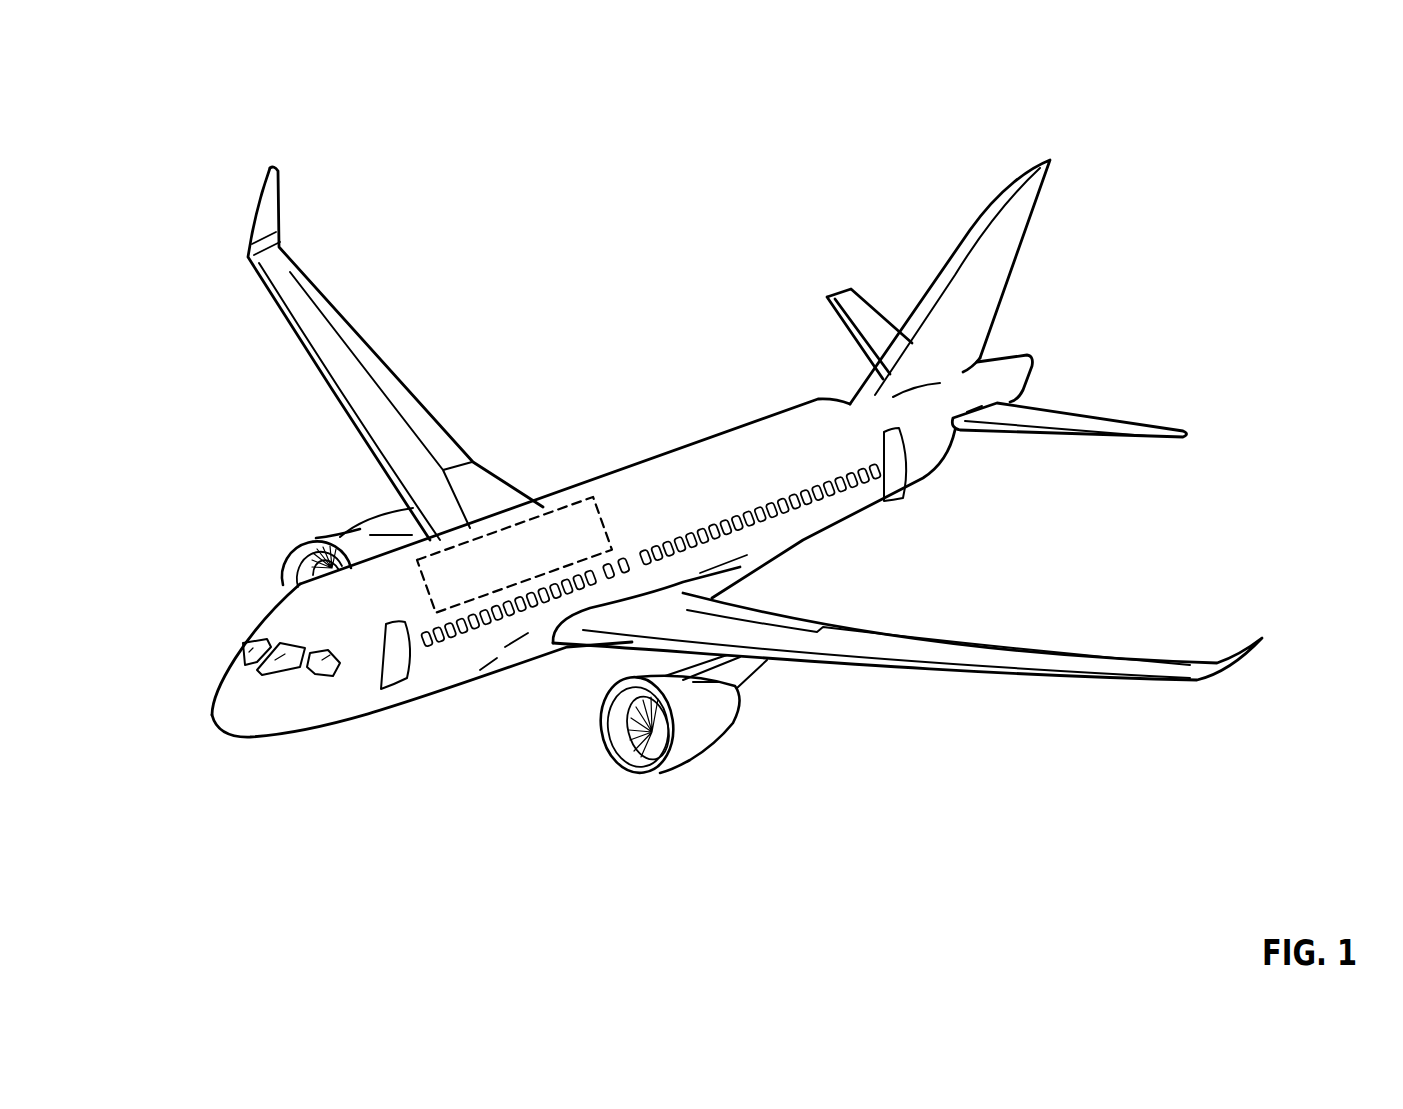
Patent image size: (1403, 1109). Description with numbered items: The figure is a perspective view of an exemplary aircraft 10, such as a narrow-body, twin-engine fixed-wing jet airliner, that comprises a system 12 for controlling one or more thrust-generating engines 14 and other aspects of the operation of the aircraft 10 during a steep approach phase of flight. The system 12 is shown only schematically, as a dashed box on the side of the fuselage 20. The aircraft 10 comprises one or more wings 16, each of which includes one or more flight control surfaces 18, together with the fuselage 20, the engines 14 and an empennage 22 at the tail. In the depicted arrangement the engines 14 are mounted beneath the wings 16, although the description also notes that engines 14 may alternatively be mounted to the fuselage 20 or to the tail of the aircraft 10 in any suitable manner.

The aircraft 10 is at (247, 127).
The system 12 is at (514, 555).
The thrust-generating engines 14 is at (333, 536).
The wings 16 is at (265, 398).
The flight control surfaces 18 is at (358, 422).
The fuselage 20 is at (633, 483).
The empennage 22 is at (915, 217).